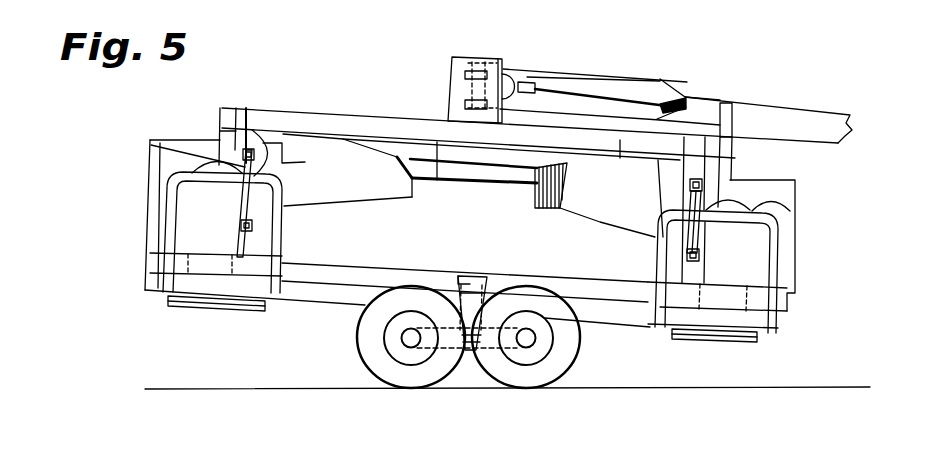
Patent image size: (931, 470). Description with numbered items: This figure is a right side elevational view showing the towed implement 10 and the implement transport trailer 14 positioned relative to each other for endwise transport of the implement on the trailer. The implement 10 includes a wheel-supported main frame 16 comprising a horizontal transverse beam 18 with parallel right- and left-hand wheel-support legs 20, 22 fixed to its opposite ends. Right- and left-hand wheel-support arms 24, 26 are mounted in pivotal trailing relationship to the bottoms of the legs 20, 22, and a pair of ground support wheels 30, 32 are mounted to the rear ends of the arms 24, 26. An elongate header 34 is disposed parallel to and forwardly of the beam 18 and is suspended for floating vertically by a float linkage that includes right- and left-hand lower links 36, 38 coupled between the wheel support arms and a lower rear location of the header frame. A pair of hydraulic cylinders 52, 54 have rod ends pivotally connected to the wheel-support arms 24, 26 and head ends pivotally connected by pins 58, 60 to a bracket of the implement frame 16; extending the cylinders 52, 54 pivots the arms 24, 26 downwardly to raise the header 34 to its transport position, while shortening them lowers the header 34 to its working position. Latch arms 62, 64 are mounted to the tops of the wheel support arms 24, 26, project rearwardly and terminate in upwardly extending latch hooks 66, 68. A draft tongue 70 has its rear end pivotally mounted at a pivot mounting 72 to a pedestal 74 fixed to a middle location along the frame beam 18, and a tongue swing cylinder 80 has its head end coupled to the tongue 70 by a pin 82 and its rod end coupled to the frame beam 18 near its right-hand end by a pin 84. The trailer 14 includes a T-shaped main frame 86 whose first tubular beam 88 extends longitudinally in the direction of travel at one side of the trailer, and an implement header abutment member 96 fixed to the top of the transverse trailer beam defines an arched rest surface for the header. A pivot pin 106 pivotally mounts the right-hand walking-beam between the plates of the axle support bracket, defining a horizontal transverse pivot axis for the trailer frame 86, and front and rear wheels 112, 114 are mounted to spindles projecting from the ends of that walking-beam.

The towed implement 10 is at (330, 86).
The implement transport trailer 14 is at (340, 337).
The main frame 16 is at (412, 113).
The horizontal transverse beam 18 is at (481, 173).
The right-hand wheel-support leg 20 is at (730, 172).
The left-hand wheel-support leg 22 is at (220, 136).
The right-hand wheel-support arm 24 is at (683, 255).
The left-hand wheel-support arm 26 is at (257, 227).
The ground support wheel 30 is at (798, 207).
The ground support wheel 32 is at (213, 142).
The header 34 is at (150, 173).
The right-hand lower link 36 is at (703, 280).
The left-hand lower link 38 is at (230, 252).
The hydraulic cylinder 52 is at (683, 227).
The hydraulic cylinder 54 is at (284, 192).
The pin 58 is at (686, 186).
The pin 60 is at (270, 120).
The latch arm 62 is at (698, 238).
The latch arm 64 is at (245, 207).
The latch hook 66 is at (690, 197).
The latch hook 68 is at (265, 170).
The draft tongue 70 is at (788, 98).
The pivot mounting 72 is at (480, 60).
The pedestal 74 is at (462, 55).
The tongue swing cylinder 80 is at (614, 88).
The pin 82 is at (524, 80).
The pin 84 is at (724, 103).
The main frame 86 is at (310, 311).
The first tubular beam 88 is at (637, 328).
The implement header abutment member 96 is at (468, 273).
The pivot pin 106 is at (467, 335).
The front wheel 112 is at (580, 348).
The rear wheel 114 is at (385, 373).